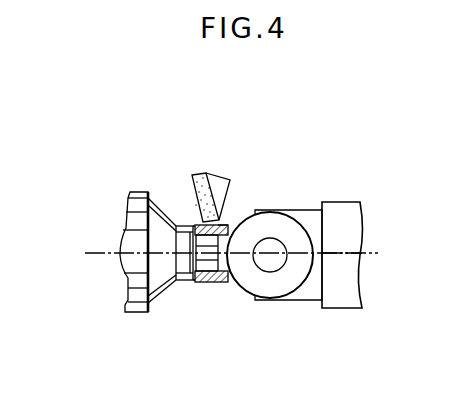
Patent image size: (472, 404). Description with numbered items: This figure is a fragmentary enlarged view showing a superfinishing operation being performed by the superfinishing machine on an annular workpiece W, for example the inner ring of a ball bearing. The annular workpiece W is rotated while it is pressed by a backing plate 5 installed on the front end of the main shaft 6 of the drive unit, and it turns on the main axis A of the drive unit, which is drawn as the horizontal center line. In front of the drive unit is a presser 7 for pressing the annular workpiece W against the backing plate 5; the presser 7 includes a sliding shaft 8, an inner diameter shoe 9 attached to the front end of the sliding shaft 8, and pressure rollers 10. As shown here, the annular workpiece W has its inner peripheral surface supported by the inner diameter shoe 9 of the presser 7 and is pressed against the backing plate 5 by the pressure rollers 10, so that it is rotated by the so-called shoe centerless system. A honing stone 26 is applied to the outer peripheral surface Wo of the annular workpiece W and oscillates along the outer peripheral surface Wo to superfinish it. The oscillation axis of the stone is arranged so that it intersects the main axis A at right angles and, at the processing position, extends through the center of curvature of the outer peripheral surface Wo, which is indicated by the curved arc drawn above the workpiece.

The main axis A is at (117, 257).
The backing plate 5 is at (176, 226).
The main shaft 6 is at (133, 312).
The presser 7 is at (338, 210).
The sliding shaft 8 is at (342, 290).
The inner diameter shoe 9 is at (217, 283).
The pressure rollers 10 is at (267, 283).
The honing stone 26 is at (201, 175).
The annular workpiece W is at (195, 281).
The outer peripheral surface Wo is at (205, 272).